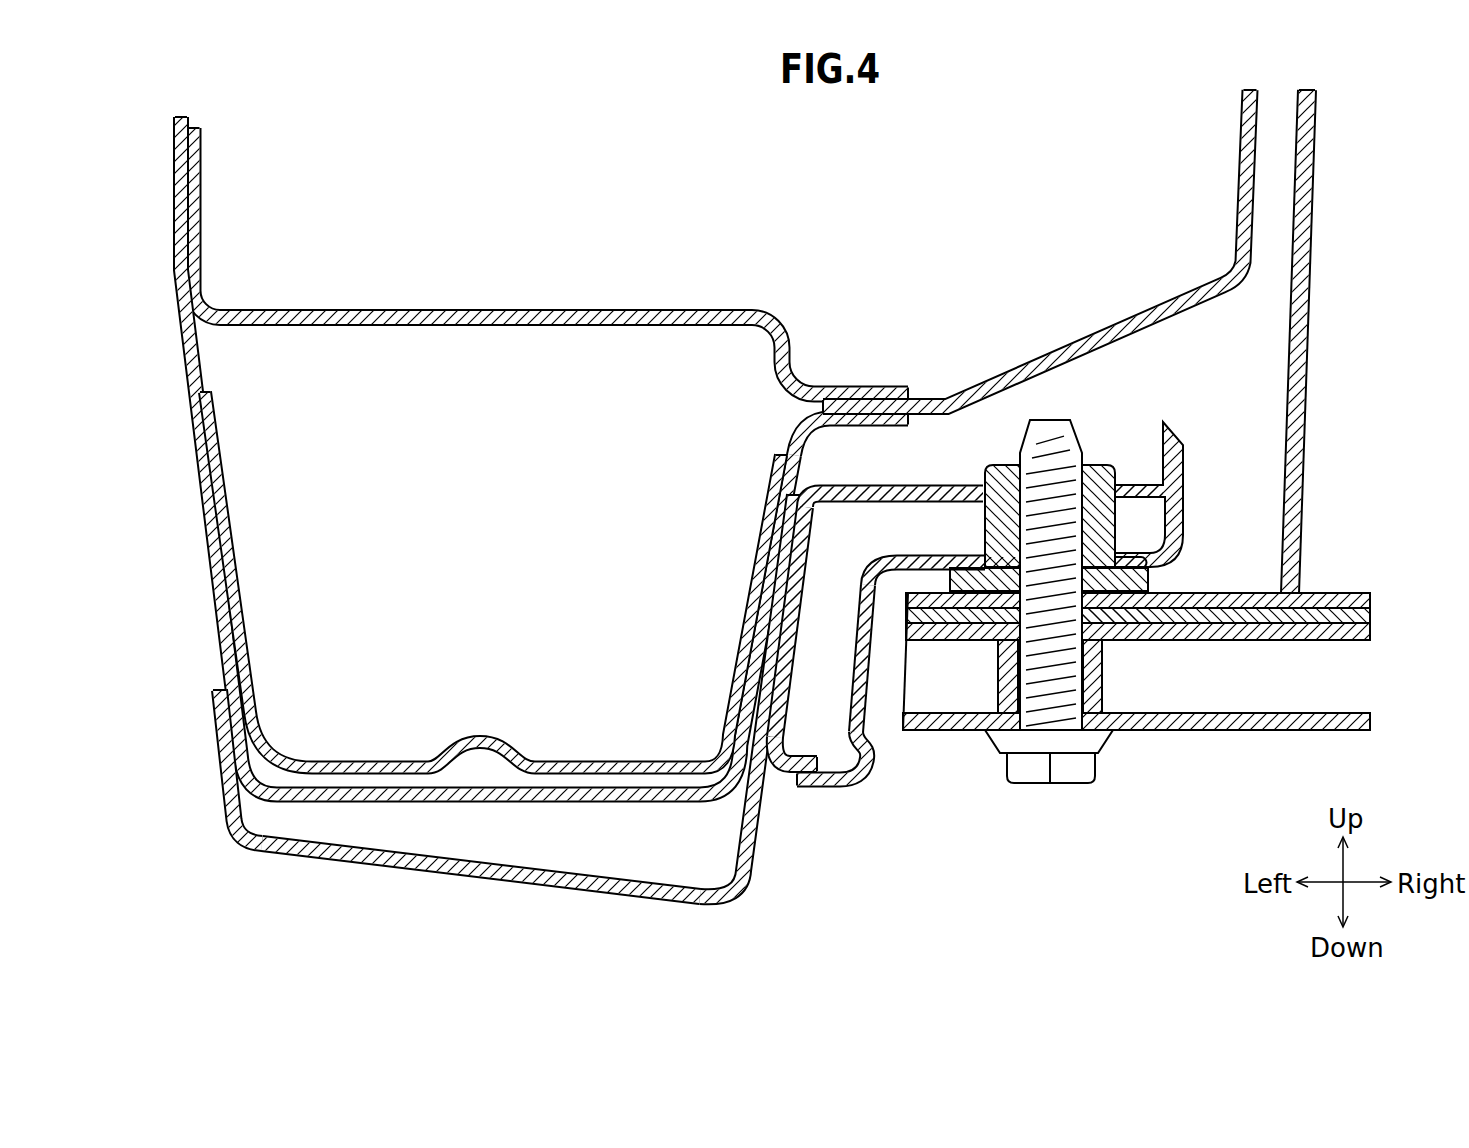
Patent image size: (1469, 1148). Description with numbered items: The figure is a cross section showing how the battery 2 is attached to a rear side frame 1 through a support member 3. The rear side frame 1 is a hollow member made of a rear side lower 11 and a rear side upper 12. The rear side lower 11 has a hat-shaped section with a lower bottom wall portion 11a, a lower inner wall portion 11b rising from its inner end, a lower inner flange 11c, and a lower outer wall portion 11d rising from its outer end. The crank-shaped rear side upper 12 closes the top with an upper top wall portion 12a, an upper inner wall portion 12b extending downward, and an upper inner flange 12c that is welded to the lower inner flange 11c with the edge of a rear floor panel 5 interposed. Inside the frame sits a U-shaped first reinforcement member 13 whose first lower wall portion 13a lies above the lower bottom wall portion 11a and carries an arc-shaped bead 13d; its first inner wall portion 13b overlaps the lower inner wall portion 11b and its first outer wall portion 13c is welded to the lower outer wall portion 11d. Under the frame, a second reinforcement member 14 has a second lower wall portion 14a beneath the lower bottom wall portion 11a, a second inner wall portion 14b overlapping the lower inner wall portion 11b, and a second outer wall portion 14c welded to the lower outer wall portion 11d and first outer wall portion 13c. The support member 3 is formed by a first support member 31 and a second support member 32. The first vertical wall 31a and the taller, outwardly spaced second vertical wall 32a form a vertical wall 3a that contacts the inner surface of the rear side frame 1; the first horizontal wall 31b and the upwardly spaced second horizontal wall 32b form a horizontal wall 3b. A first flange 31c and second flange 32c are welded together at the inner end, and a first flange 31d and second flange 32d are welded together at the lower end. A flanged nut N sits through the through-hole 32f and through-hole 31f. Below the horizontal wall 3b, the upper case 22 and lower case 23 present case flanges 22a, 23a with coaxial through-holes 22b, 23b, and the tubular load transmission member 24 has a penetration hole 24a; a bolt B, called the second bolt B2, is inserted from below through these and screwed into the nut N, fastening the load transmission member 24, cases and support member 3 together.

The rear side frame 1 is at (517, 526).
The battery 2 is at (1222, 747).
The support member 3 is at (929, 572).
The vertical wall 3a is at (800, 658).
The horizontal wall 3b is at (895, 511).
The rear floor panel 5 is at (872, 408).
The rear side lower 11 is at (339, 808).
The lower bottom wall portion 11a is at (400, 803).
The lower inner wall portion 11b is at (754, 766).
The lower inner flange 11c is at (847, 412).
The lower outer wall portion 11d is at (200, 532).
The rear side upper 12 is at (413, 253).
The upper top wall portion 12a is at (502, 311).
The upper inner wall portion 12b is at (784, 340).
The upper inner flange 12c is at (880, 389).
The first reinforcement member 13 is at (294, 773).
The first lower wall portion 13a is at (598, 775).
The first inner wall portion 13b is at (735, 668).
The first outer wall portion 13c is at (216, 600).
The bead 13d is at (485, 763).
The second reinforcement member 14 is at (681, 911).
The second lower wall portion 14a is at (640, 890).
The second inner wall portion 14b is at (751, 839).
The second outer wall portion 14c is at (222, 748).
The upper case 22 is at (1174, 562).
The case flange 22a is at (1258, 598).
The through-hole 22b is at (1072, 598).
The lower case 23 is at (1182, 593).
The case flange 23a is at (1322, 612).
The through-hole 23b is at (1077, 626).
The load transmission member 24 is at (1265, 731).
The penetration hole 24a is at (1098, 681).
The first support member 31 is at (959, 543).
The first vertical wall 31a is at (868, 700).
The first horizontal wall 31b is at (950, 556).
The first flange 31c is at (1152, 545).
The first flange 31d is at (804, 781).
The through-hole 31f is at (1003, 555).
The second support member 32 is at (943, 476).
The second vertical wall 32a is at (778, 588).
The second horizontal wall 32b is at (850, 486).
The second flange 32c is at (1167, 426).
The second flange 32d is at (794, 786).
The through-hole 32f is at (1122, 470).
The bolt B is at (1058, 508).
The second bolt B2 is at (1051, 438).
The nut N is at (1100, 464).